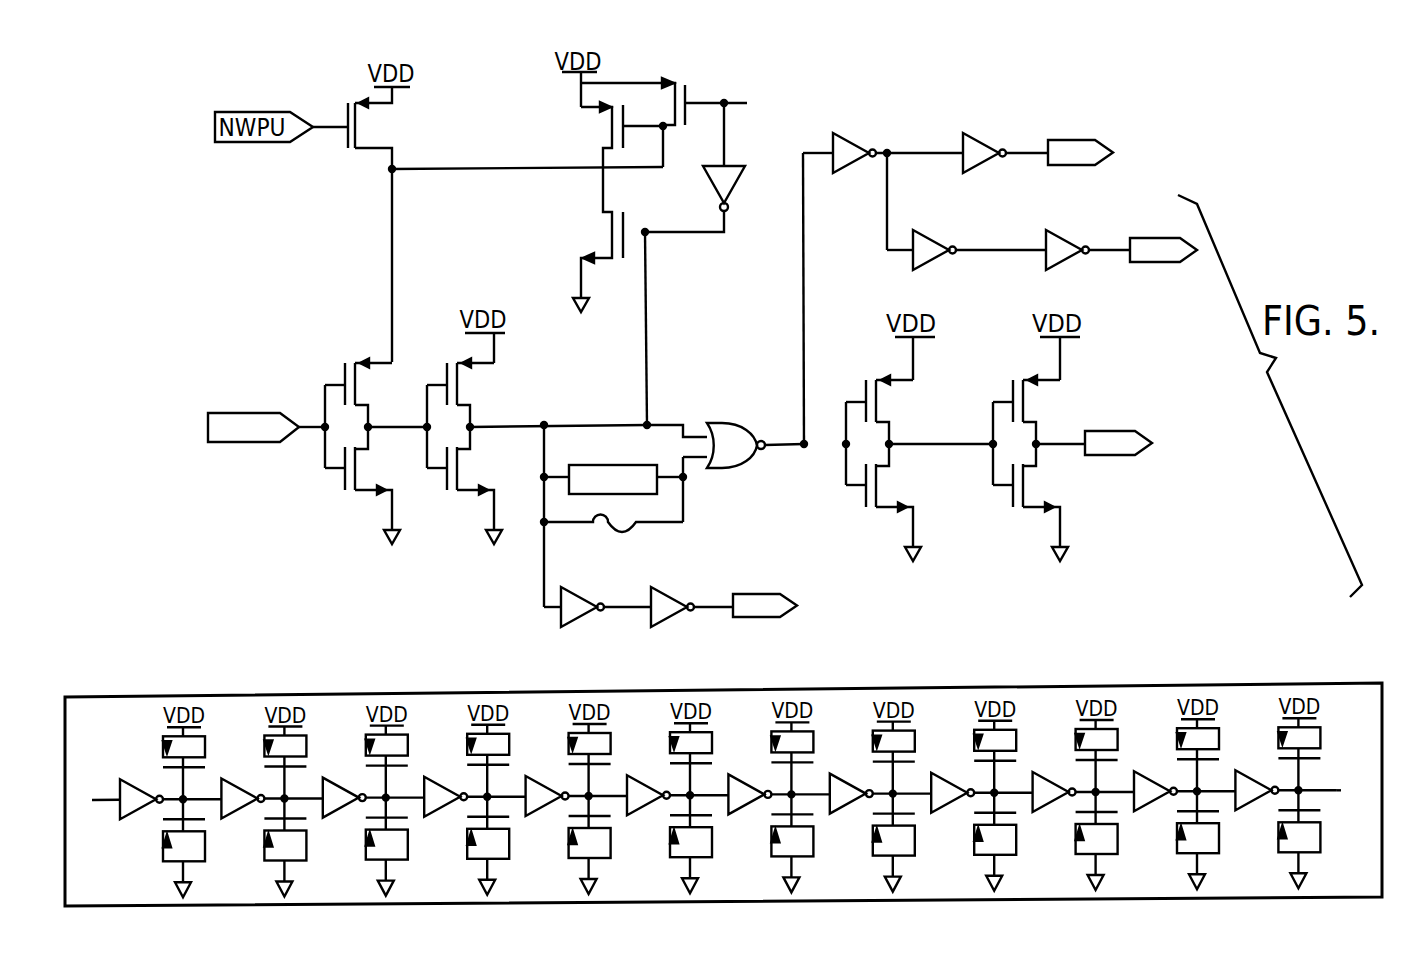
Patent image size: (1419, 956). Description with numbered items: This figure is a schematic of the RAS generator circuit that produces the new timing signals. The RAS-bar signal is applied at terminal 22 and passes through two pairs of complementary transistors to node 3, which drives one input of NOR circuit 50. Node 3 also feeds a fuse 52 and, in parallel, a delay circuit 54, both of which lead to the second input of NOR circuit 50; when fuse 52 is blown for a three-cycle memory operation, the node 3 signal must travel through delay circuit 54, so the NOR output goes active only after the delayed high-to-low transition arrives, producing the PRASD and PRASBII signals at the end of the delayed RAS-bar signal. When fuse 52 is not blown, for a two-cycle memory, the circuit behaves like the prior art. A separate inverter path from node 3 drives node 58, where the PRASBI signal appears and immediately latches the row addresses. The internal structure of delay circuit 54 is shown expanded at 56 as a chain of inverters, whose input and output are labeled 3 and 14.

The terminal 22 is at (242, 413).
The NOR circuit 50 is at (725, 435).
The fuse 52 is at (631, 531).
The delay circuit 54 is at (602, 465).
The expanded delay circuit detail 56 is at (308, 700).
The node 58 is at (785, 601).
The node 3 is at (99, 800).
The delay line output node 14 is at (1354, 791).